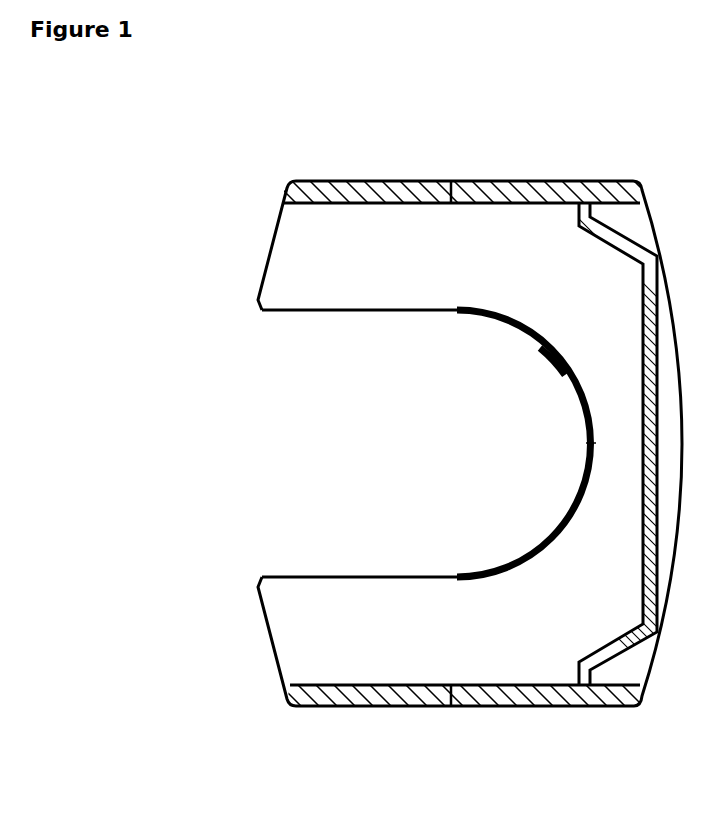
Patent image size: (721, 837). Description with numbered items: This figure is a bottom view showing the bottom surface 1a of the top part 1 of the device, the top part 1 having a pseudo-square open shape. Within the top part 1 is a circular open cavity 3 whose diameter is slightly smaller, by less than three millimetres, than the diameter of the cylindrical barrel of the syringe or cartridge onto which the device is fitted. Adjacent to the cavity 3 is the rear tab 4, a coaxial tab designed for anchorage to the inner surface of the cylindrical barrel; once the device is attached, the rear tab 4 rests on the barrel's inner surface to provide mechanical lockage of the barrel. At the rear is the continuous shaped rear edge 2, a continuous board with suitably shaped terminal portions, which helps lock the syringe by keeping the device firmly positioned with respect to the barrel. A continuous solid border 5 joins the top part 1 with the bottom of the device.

The top part 1 is at (267, 622).
The bottom surface 1a is at (359, 474).
The continuous shaped rear edge 2 is at (643, 563).
The circular open cavity 3 is at (577, 413).
The rear tab 4 is at (553, 362).
The continuous solid border 5 is at (458, 178).